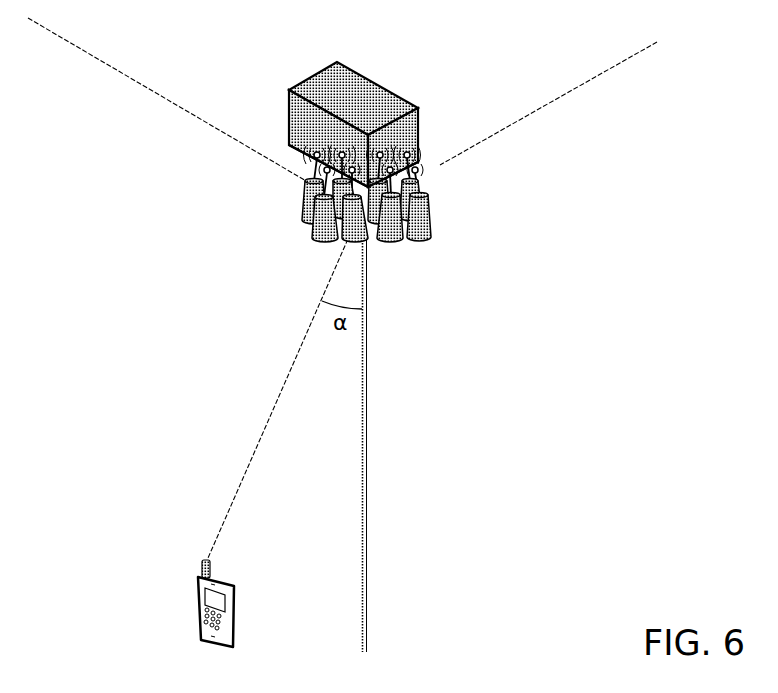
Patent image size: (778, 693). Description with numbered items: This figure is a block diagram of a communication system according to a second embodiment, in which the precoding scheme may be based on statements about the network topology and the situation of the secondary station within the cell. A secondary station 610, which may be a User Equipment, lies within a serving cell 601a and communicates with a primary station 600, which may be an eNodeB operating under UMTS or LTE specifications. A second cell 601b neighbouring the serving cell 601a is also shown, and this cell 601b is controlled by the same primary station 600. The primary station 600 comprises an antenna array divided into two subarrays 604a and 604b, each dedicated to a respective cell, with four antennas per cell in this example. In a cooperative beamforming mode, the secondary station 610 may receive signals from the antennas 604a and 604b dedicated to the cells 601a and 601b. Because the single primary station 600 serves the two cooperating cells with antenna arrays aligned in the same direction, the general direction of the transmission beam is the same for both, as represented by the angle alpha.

The primary station 600 is at (378, 85).
The serving cell 601a is at (61, 188).
The second cell 601b is at (670, 186).
The antenna subarray 604a is at (320, 242).
The antenna subarray 604b is at (435, 230).
The secondary station 610 is at (200, 626).